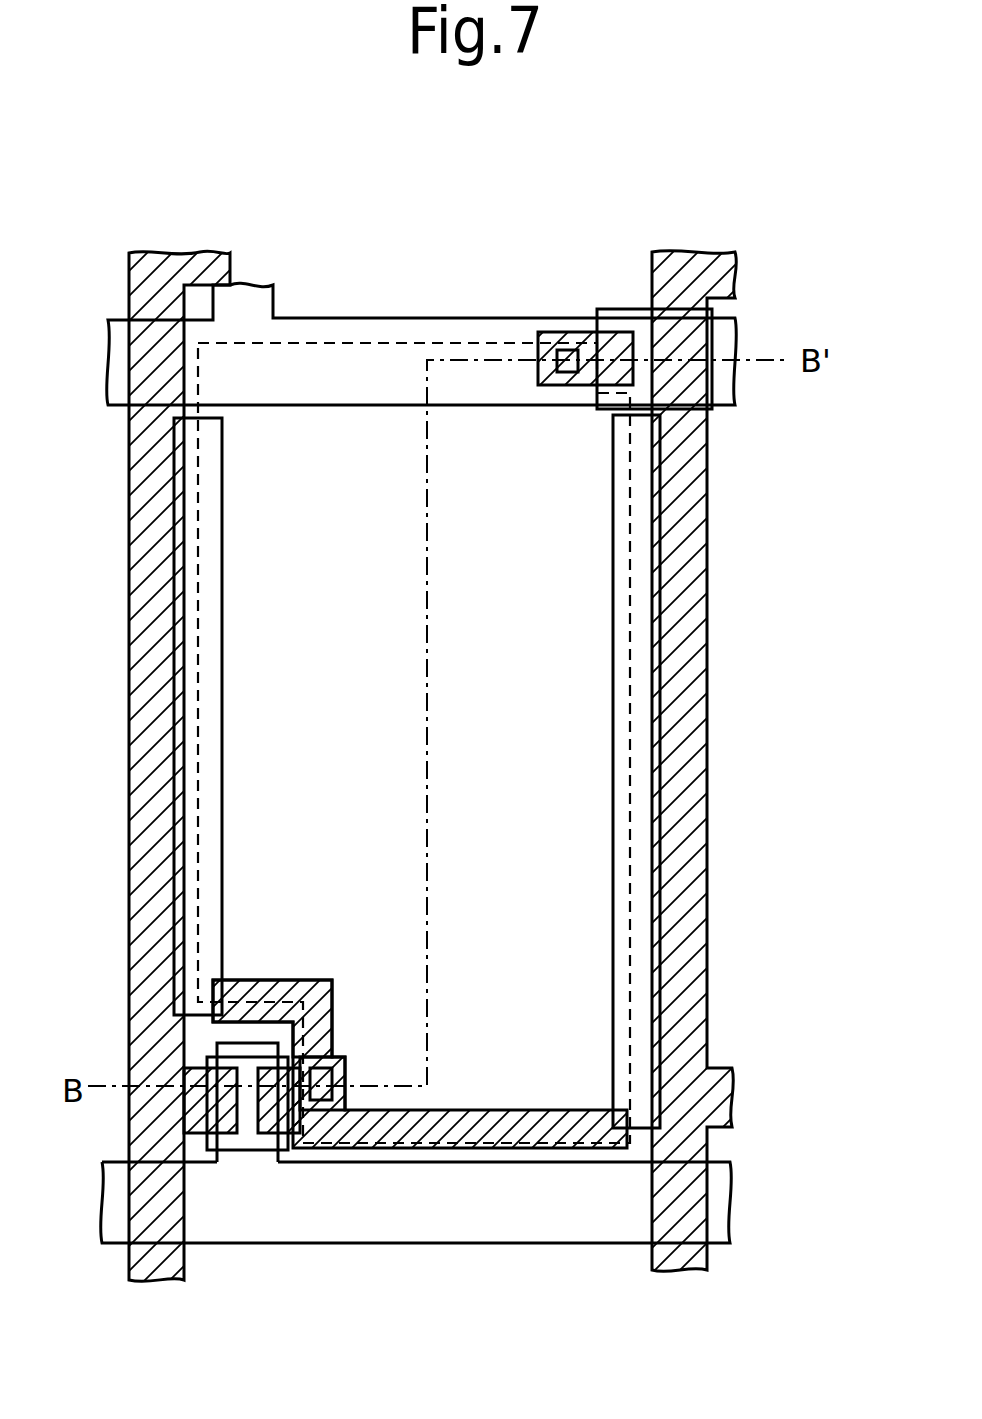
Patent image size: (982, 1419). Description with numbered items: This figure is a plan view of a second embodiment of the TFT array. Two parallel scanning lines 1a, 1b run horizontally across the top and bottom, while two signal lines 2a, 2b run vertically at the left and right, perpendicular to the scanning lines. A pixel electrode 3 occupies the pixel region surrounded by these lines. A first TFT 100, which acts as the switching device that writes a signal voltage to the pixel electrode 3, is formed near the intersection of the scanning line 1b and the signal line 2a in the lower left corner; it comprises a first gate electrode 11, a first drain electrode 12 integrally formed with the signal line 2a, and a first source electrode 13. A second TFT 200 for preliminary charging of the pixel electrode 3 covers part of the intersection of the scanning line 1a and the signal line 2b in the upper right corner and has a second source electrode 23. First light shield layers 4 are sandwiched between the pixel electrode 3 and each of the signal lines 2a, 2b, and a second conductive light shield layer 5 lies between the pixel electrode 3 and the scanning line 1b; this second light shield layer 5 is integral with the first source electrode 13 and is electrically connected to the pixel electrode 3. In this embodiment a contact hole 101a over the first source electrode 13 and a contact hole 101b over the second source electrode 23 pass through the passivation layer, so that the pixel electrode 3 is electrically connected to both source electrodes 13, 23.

The scanning line 1a is at (262, 299).
The scanning line 1b is at (720, 1178).
The signal line 2a is at (150, 820).
The signal line 2b is at (690, 846).
The pixel electrode 3 is at (580, 1015).
The first light shield layer 4 is at (195, 563).
The second light shield layer 5 is at (460, 1150).
The first gate electrode 11 is at (237, 1050).
The first drain electrode 12 is at (210, 1120).
The first source electrode 13 is at (283, 1053).
The second source electrode 23 is at (598, 334).
The first TFT 100 is at (252, 1150).
The contact hole 101a is at (378, 1045).
The contact hole 101b is at (563, 388).
The second TFT 200 is at (638, 327).